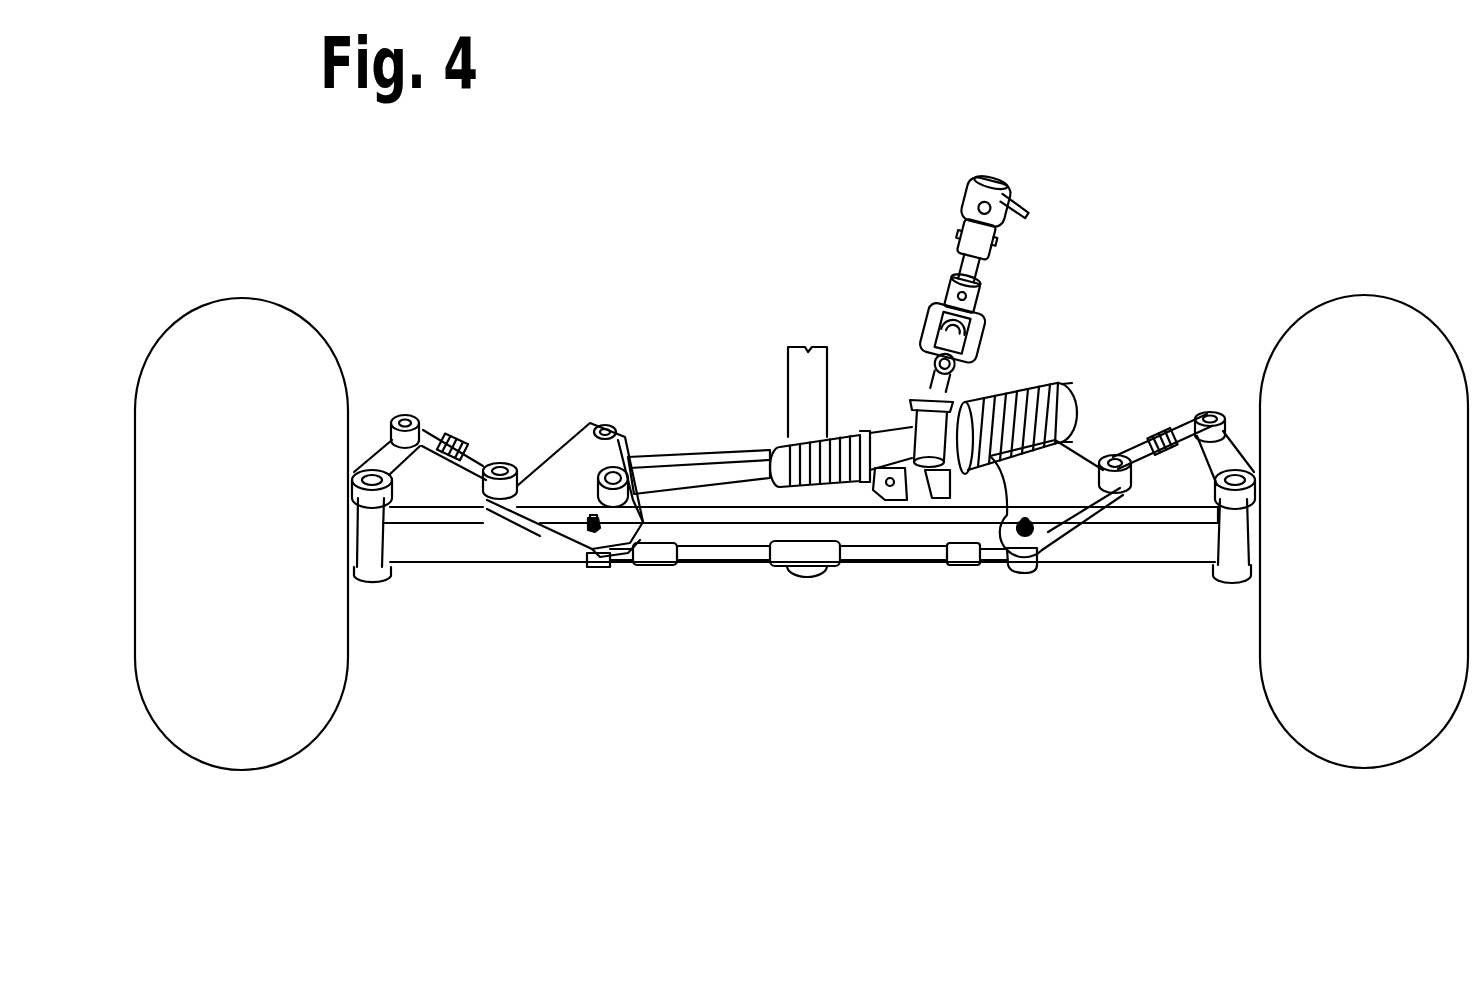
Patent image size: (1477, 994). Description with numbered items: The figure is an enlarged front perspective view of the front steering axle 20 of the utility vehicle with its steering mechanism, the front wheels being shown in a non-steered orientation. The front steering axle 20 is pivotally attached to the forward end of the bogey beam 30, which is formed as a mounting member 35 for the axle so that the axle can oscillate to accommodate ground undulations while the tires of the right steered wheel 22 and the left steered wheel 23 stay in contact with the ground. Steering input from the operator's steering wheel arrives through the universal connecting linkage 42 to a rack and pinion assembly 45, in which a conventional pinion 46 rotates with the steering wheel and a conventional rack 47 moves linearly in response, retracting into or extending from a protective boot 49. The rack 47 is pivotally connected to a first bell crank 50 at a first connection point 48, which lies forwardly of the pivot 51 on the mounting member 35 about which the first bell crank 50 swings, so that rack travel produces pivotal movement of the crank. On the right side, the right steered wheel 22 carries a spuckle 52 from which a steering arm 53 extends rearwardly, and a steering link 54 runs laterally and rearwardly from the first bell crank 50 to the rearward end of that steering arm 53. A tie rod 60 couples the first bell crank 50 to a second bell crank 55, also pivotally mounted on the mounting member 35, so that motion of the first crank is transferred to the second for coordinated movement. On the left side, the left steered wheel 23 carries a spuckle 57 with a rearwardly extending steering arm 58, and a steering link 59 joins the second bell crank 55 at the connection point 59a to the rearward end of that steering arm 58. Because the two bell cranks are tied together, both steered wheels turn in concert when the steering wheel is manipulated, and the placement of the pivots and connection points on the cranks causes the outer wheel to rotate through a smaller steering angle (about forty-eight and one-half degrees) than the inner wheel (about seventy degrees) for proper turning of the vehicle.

The front steering axle 20 is at (430, 550).
The right steered wheel 22 is at (283, 762).
The left steered wheel 23 is at (1350, 767).
The bogey beam 30 is at (808, 345).
The mounting member 35 is at (718, 456).
The universal connecting linkage 42 is at (1012, 206).
The rack and pinion assembly 45 is at (870, 400).
The pinion 46 is at (962, 402).
The rack 47 is at (658, 478).
The first connection point 48 is at (637, 558).
The protective boot 49 is at (1084, 406).
The first bell crank 50 is at (548, 523).
The pivot 51 is at (606, 424).
The spuckle 52 is at (367, 533).
The steering arm 53 is at (388, 452).
The steering link 54 is at (462, 452).
The second bell crank 55 is at (1053, 530).
The spuckle 57 is at (1247, 536).
The steering arm 58 is at (1237, 454).
The steering link 59 is at (1212, 412).
The connection point 59a is at (1112, 457).
The tie rod 60 is at (873, 563).